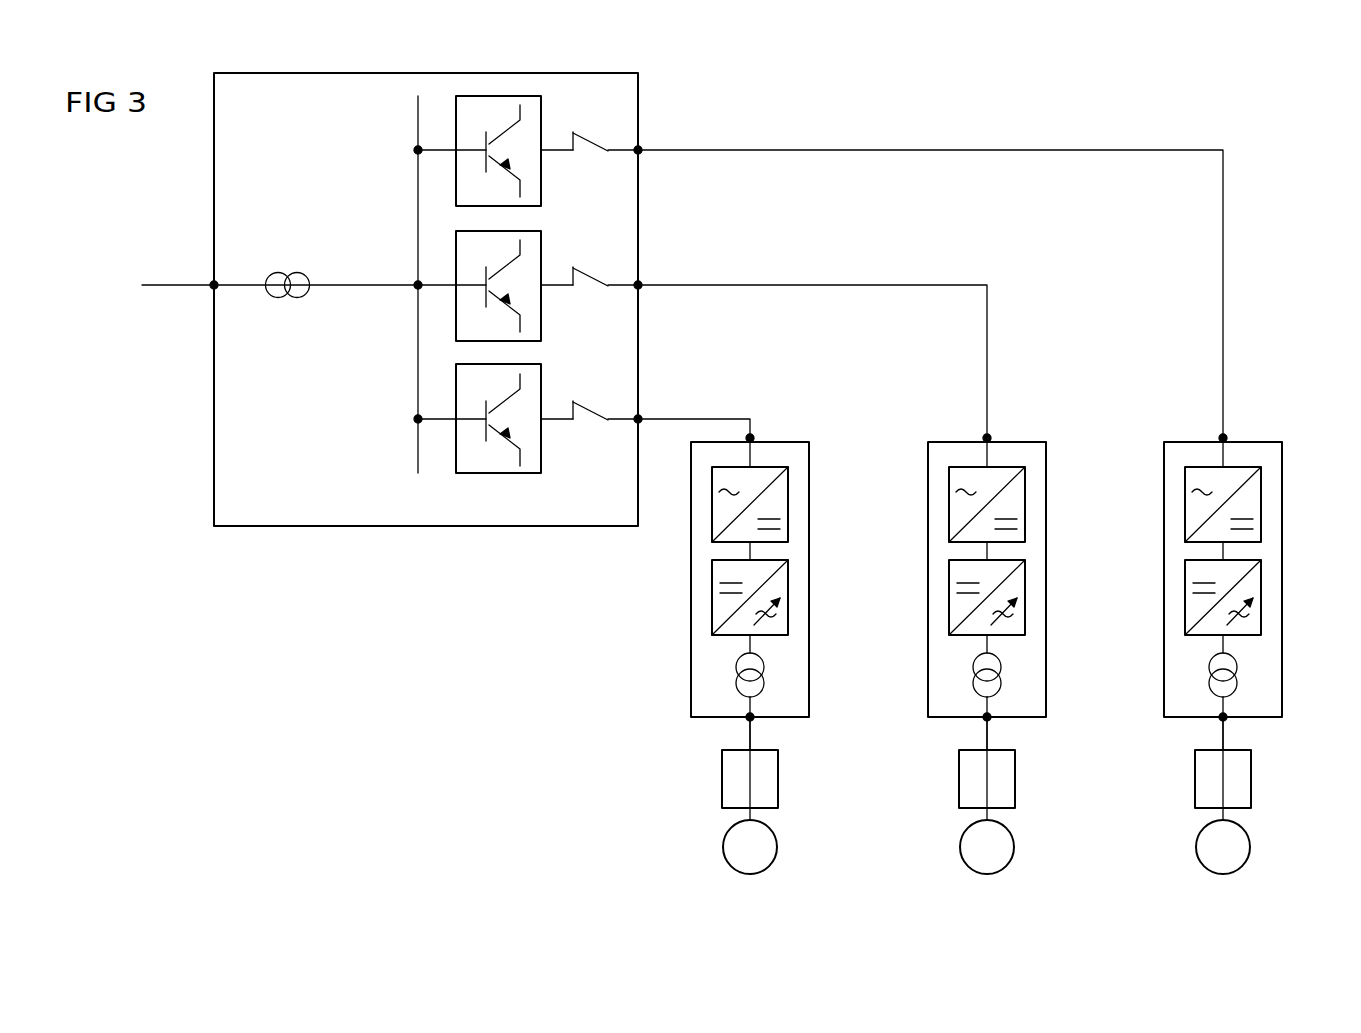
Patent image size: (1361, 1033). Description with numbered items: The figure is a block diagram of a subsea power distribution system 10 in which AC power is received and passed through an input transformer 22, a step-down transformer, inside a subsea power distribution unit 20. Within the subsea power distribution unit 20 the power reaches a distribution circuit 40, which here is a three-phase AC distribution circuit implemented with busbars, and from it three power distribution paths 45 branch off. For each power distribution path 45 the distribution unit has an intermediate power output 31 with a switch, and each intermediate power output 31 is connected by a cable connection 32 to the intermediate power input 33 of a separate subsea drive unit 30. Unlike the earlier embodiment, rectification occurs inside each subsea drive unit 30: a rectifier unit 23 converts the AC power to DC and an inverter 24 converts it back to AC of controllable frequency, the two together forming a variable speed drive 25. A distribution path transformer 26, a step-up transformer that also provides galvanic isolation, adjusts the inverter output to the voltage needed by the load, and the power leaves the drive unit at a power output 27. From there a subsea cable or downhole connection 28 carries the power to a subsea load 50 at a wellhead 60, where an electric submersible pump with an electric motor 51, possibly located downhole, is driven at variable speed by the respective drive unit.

The subsea power distribution system 10 is at (1263, 125).
The subsea power distribution unit 20 is at (383, 528).
The input transformer 22 is at (292, 271).
The rectifier unit 23 is at (790, 505).
The inverter 24 is at (790, 598).
The variable speed drive 25 is at (684, 467).
The distribution path transformer 26 is at (765, 683).
The power output 27 is at (754, 719).
The subsea cable or downhole connection 28 is at (747, 735).
The subsea drive unit 30 is at (810, 545).
The intermediate power output 31 is at (640, 147).
The cable connection 32 is at (930, 148).
The intermediate power input 33 is at (754, 437).
The distribution circuit 40 is at (447, 480).
The power distribution path 45 is at (399, 96).
The subsea load 50 is at (687, 822).
The electric motor 51 is at (777, 848).
The wellhead 60 is at (778, 780).